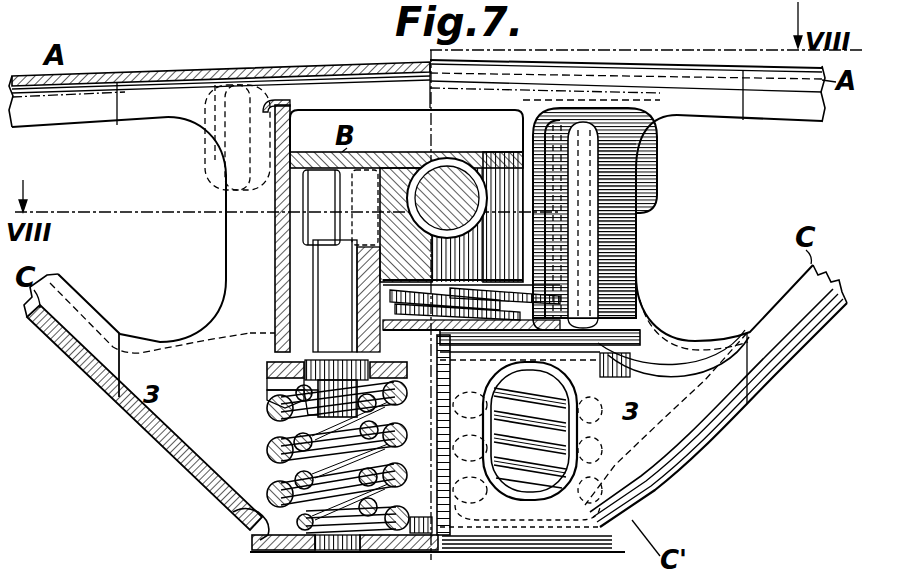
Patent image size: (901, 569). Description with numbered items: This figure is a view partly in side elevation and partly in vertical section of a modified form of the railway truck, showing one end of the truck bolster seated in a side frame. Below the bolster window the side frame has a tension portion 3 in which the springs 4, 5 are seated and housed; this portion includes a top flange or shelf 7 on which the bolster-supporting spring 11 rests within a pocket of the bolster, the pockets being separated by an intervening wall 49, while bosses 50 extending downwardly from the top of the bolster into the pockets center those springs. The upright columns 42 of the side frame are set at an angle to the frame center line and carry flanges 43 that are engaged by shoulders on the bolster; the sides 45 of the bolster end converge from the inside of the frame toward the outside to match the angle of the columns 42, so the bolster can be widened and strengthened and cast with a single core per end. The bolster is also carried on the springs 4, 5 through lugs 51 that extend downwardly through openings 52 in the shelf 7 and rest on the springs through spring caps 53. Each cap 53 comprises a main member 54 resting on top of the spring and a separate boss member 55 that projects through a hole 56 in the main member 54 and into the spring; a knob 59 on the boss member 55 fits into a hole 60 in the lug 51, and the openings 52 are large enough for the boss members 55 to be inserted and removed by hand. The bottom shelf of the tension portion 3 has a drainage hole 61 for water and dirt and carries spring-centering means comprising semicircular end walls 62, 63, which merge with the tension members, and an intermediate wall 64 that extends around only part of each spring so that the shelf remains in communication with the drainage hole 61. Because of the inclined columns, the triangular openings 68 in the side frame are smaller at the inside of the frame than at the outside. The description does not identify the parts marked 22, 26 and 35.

The tension portion of side frame 3 is at (139, 371).
The spring 4 is at (267, 461).
The spring 5 is at (562, 460).
The top flange or shelf 7 is at (600, 322).
The bolster-supporting spring 11 is at (535, 292).
The shell bracket 22 is at (84, 336).
The housing lobe 26 is at (213, 153).
The spring coil 35 is at (562, 398).
The upright column 42 is at (277, 235).
The column flange 43 is at (648, 229).
The bolster end side 45 is at (280, 220).
The intervening wall 49 is at (415, 165).
The boss 50 is at (446, 170).
The lug 51 is at (268, 366).
The opening in shelf 52 is at (270, 337).
The spring cap 53 is at (268, 372).
The main member of spring cap 54 is at (418, 410).
The boss member of spring cap 55 is at (264, 410).
The hole in main member 56 is at (268, 446).
The knob 59 is at (336, 332).
The hole in lug 60 is at (319, 264).
The drainage hole 61 is at (227, 520).
The semicircular end wall 62 is at (226, 513).
The semicircular end wall 63 is at (602, 514).
The intermediate wall 64 is at (418, 512).
The triangular opening 68 is at (142, 118).